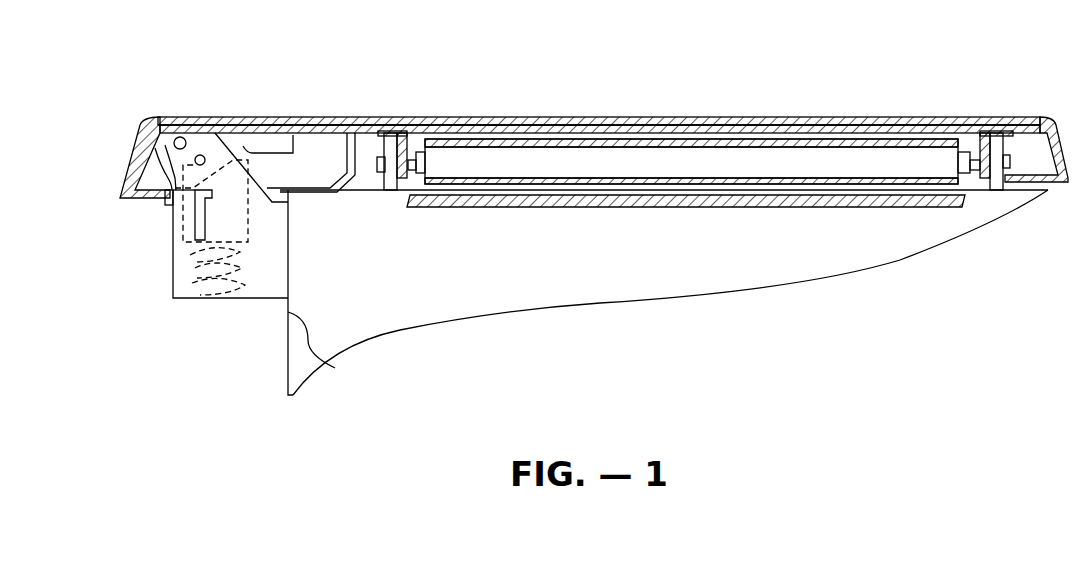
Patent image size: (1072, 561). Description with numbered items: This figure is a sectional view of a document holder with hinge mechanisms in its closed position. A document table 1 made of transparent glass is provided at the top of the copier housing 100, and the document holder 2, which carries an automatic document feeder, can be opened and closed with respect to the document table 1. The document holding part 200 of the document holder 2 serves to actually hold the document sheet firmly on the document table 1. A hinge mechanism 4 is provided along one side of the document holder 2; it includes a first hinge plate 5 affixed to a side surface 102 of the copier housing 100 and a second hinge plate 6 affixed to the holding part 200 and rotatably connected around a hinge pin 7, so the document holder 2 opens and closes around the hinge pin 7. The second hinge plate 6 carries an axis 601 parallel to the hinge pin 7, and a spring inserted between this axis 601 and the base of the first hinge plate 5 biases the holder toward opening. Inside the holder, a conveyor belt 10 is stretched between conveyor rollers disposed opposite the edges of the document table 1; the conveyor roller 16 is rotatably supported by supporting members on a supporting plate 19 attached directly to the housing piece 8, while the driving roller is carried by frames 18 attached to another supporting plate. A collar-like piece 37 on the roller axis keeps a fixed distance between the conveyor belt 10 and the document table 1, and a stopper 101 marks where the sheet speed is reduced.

The document table 1 is at (690, 207).
The document holder 2 is at (702, 120).
The hinge mechanism 4 is at (170, 232).
The first hinge plate 5 is at (172, 267).
The second hinge plate 6 is at (263, 147).
The hinge pin 7 is at (174, 143).
The housing piece 8 is at (872, 120).
The conveyor belt 10 is at (533, 140).
The conveyor roller 16 is at (525, 167).
The frame 18 is at (397, 135).
The supporting plate 19 is at (462, 131).
The collar-like piece 37 is at (396, 190).
The copier housing 100 is at (555, 240).
The stopper 101 is at (373, 195).
The side surface 102 is at (328, 349).
The document holding part 200 is at (1066, 112).
The axis 601 is at (200, 155).